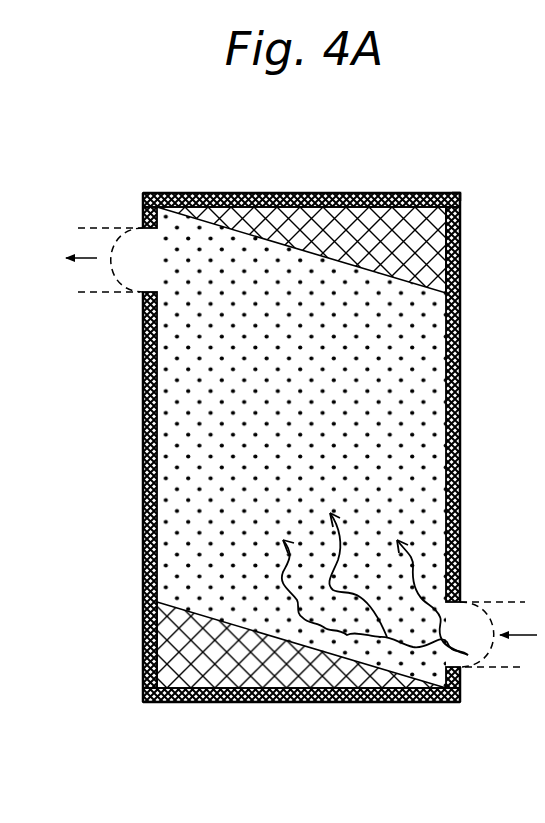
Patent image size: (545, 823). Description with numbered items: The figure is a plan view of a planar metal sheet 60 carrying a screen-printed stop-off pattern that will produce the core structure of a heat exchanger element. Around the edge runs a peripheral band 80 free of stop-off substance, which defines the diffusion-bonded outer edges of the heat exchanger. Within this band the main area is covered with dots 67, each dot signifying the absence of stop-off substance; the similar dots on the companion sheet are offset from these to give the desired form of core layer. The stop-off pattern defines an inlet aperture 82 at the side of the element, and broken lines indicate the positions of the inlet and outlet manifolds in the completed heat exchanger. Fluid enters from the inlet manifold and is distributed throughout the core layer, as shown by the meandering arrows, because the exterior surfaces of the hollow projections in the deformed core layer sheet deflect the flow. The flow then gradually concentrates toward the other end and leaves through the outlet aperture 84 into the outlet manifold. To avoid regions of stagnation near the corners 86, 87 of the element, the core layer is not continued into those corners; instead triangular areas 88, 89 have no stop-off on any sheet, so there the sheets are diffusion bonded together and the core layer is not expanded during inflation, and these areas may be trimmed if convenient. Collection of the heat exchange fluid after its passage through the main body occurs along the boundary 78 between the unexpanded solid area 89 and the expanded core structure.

The metal sheet 60 is at (293, 440).
The dots 67 is at (436, 370).
The boundary 78 is at (293, 243).
The peripheral band 80 is at (318, 192).
The inlet aperture 82 is at (477, 640).
The outlet aperture 84 is at (140, 252).
The corner 86 is at (143, 693).
The corner 87 is at (462, 193).
The triangular area 88 is at (225, 676).
The triangular area 89 is at (418, 256).